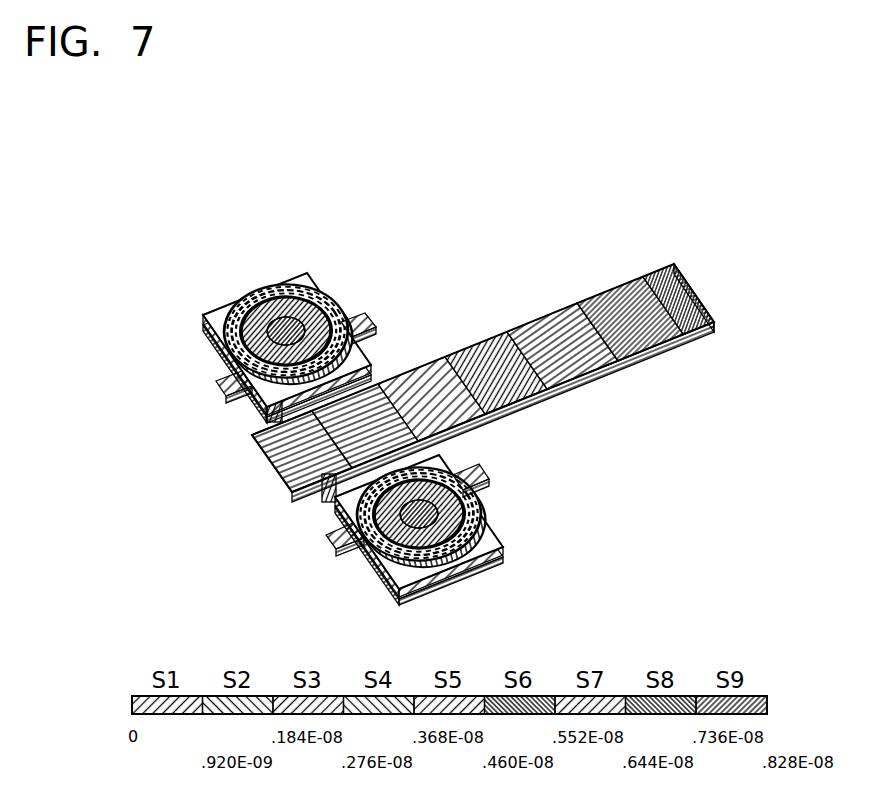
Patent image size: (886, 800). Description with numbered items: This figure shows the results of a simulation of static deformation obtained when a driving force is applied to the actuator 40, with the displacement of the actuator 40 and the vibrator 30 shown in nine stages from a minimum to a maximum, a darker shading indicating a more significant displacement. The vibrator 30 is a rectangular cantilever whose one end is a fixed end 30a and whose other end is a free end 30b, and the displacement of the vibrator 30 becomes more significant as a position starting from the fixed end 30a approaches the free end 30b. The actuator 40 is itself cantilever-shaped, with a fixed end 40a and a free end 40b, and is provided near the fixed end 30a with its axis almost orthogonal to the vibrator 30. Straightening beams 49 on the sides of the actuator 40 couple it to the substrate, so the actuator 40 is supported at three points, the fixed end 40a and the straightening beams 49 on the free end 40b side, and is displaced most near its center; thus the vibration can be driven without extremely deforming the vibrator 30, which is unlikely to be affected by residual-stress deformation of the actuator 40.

The vibrator 30 is at (455, 358).
The fixed end 30a is at (268, 466).
The free end 30b is at (699, 293).
The actuator 40 is at (496, 532).
The fixed end 40a is at (299, 272).
The free end 40b is at (360, 356).
The straightening beam 49 is at (362, 318).